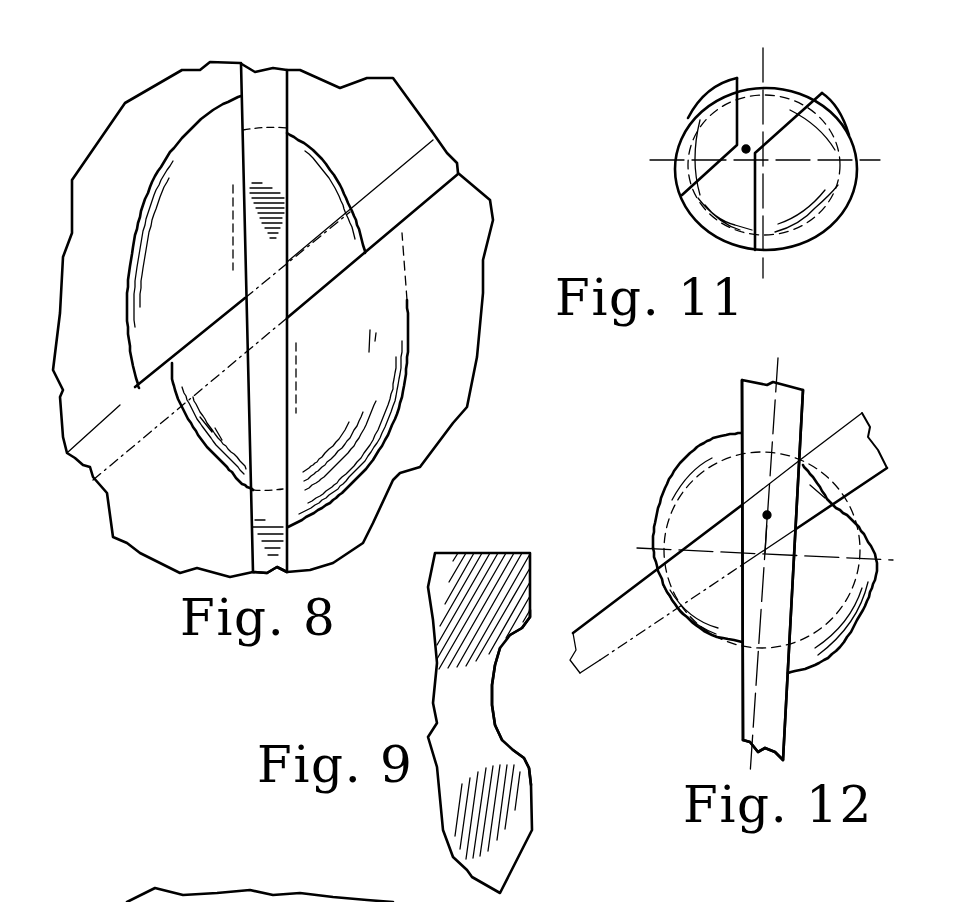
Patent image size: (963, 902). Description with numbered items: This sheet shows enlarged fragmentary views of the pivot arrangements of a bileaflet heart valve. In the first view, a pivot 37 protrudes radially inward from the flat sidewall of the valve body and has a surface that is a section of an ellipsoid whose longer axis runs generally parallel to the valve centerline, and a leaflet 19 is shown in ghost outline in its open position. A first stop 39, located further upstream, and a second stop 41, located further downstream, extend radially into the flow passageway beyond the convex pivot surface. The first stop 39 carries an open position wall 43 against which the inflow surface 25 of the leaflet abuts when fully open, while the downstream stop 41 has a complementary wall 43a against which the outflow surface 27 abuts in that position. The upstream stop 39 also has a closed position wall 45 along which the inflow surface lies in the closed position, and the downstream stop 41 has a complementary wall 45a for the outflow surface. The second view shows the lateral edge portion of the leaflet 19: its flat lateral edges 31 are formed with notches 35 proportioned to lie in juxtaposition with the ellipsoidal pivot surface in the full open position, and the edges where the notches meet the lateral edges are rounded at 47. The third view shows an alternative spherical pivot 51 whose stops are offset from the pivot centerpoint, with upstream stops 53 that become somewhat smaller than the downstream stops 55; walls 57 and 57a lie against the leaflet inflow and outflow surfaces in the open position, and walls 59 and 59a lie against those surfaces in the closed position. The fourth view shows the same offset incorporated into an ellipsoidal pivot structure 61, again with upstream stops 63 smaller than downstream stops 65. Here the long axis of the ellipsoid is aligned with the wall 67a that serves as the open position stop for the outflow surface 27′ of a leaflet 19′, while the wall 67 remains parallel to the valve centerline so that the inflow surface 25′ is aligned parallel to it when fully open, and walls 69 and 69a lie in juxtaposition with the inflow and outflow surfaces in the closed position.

In FIG. 9, the leaflet 19 is at (480, 538).
In FIG. 12, the leaflet 19′ is at (787, 402).
In FIG. 8, the inflow surface 25 is at (240, 82).
In FIG. 12, the inflow surface 25′ is at (743, 710).
In FIG. 8, the outflow surface 27 is at (287, 543).
In FIG. 12, the outflow surface 27′ is at (783, 732).
In FIG. 9, the lateral edges 31 is at (530, 577).
In FIG. 9, the notches 35 is at (492, 687).
In FIG. 8, the pivot 37 is at (340, 142).
In FIG. 8, the first stop 39 is at (193, 190).
In FIG. 8, the second stop 41 is at (347, 383).
In FIG. 8, the open position wall 43 is at (245, 157).
In FIG. 8, the complementary wall 43a is at (255, 448).
In FIG. 8, the closed position wall 45 is at (160, 370).
In FIG. 8, the complementary wall 45a is at (360, 250).
In FIG. 9, the rounded edges 47 is at (530, 624).
In FIG. 11, the spherical pivot 51 is at (777, 97).
In FIG. 11, the upstream stops 53 is at (712, 95).
In FIG. 11, the downstream stops 55 is at (827, 207).
In FIG. 11, the wall 57 is at (740, 80).
In FIG. 11, the wall 57a is at (755, 235).
In FIG. 11, the wall 59 is at (693, 193).
In FIG. 11, the wall 59a is at (813, 100).
In FIG. 12, the ellipsoidal pivot structure 61 is at (707, 622).
In FIG. 12, the upstream stops 63 is at (710, 483).
In FIG. 12, the downstream stops 65 is at (832, 588).
In FIG. 12, the wall 67 is at (743, 453).
In FIG. 12, the wall 67a is at (787, 645).
In FIG. 12, the wall 69 is at (660, 570).
In FIG. 12, the wall 69a is at (847, 490).